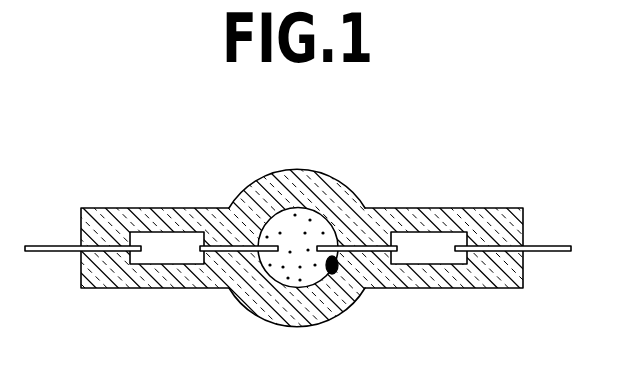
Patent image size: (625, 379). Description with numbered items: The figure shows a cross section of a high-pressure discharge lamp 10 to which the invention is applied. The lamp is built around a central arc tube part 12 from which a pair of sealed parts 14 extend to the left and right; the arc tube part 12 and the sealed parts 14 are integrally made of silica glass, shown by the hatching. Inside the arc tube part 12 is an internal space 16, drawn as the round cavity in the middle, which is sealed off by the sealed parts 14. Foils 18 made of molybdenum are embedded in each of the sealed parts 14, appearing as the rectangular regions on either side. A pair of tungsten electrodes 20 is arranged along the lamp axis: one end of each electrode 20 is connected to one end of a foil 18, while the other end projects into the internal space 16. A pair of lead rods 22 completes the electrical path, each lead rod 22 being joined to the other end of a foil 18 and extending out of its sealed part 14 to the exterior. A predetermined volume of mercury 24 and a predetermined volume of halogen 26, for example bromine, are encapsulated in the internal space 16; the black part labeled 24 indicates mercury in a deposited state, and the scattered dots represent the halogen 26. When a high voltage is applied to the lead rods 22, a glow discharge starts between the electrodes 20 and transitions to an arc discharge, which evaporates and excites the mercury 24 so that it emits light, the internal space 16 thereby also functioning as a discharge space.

The high-pressure discharge lamp 10 is at (500, 128).
The arc tube part 12 is at (306, 178).
The sealed parts 14 is at (156, 213).
The internal space 16 is at (289, 234).
The foils 18 is at (180, 264).
The electrodes 20 is at (240, 252).
The lead rods 22 is at (55, 253).
The mercury 24 is at (329, 273).
The halogen 26 is at (300, 282).